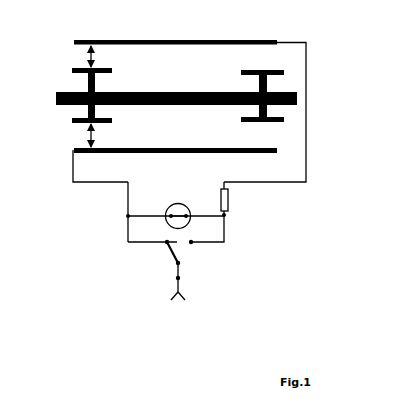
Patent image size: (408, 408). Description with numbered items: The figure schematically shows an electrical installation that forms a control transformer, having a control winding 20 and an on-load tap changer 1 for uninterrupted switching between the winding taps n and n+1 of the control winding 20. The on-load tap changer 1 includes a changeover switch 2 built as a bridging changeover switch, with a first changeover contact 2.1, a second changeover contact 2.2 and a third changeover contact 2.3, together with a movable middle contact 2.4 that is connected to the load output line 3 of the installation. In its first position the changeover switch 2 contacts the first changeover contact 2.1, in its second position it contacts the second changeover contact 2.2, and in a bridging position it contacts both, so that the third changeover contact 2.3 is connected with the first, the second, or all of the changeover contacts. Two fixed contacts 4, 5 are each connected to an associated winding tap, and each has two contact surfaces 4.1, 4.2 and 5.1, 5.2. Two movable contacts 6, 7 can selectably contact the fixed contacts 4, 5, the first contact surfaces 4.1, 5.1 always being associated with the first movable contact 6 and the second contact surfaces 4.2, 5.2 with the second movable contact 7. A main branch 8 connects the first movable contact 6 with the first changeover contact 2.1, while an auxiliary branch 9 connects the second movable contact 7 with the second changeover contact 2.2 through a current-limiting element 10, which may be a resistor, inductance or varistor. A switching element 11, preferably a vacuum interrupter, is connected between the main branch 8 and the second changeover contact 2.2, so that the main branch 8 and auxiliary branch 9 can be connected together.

The on-load tap changer 1 is at (110, 253).
The changeover switch 2 is at (200, 263).
The first changeover contact 2.1 is at (164, 243).
The second changeover contact 2.2 is at (192, 243).
The third changeover contact 2.3 is at (177, 278).
The movable middle contact 2.4 is at (176, 261).
The load output line 3 is at (199, 268).
The fixed contact 4 is at (80, 75).
The first contact surface 4.1 is at (73, 124).
The second contact surface 4.2 is at (111, 67).
The fixed contact 5 is at (287, 97).
The first contact surface 5.1 is at (277, 122).
The second contact surface 5.2 is at (276, 70).
The first movable contact 6 is at (88, 138).
The second movable contact 7 is at (90, 56).
The main branch 8 is at (115, 183).
The auxiliary branch 9 is at (291, 182).
The current-limiting element 10 is at (239, 201).
The switching element 11 is at (232, 246).
The control winding 20 is at (52, 98).